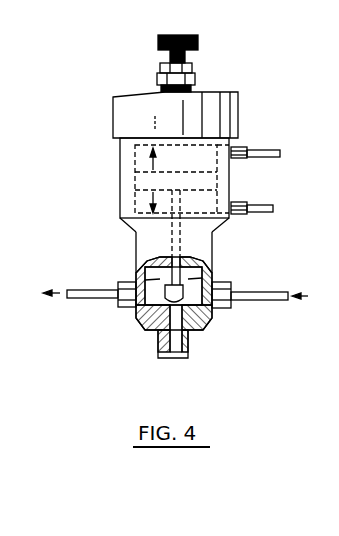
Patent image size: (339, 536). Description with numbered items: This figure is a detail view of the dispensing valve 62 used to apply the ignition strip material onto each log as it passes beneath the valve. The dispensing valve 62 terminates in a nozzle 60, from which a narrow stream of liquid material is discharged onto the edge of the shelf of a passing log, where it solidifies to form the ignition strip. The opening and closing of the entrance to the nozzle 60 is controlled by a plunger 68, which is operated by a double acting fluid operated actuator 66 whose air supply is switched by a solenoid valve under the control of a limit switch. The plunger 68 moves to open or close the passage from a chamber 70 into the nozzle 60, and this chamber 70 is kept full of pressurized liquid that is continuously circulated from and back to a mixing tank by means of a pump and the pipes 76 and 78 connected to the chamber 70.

The nozzle 60 is at (190, 333).
The dispensing valve 62 is at (112, 178).
The double acting fluid operated actuator 66 is at (232, 190).
The plunger 68 is at (210, 278).
The chamber 70 is at (150, 277).
The pipe 76 is at (254, 302).
The pipe 78 is at (103, 299).